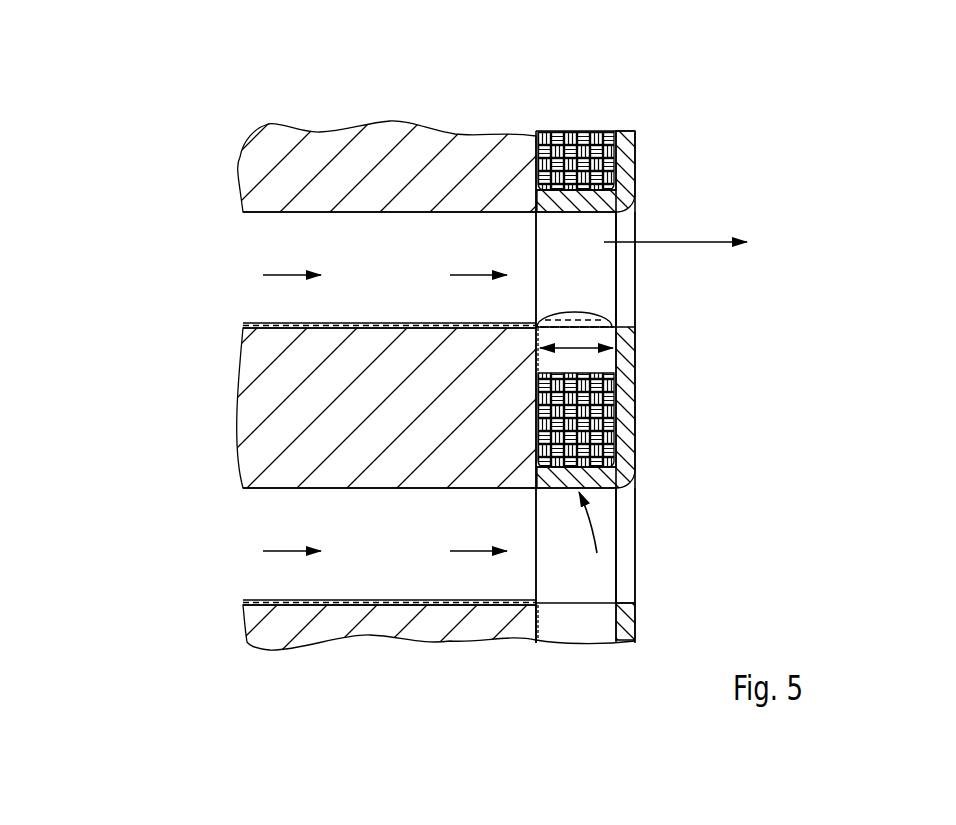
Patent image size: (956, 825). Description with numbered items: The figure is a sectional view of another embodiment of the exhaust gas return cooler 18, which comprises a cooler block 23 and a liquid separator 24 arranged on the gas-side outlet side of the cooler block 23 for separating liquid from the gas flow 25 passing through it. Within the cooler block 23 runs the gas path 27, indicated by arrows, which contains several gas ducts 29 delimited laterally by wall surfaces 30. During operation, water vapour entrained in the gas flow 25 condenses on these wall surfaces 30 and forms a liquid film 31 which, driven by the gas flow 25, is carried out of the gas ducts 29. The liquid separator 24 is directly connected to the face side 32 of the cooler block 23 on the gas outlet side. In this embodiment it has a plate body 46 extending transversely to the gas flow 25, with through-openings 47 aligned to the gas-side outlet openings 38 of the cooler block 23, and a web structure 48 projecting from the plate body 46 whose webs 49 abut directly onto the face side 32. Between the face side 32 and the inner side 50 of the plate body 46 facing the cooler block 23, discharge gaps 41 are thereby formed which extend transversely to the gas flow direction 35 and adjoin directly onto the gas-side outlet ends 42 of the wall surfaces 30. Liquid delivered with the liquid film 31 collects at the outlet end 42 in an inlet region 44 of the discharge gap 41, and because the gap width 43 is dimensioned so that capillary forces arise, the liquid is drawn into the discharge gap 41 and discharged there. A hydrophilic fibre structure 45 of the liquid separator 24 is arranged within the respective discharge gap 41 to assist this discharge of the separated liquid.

The exhaust gas return cooler 18 is at (203, 122).
The cooler block 23 is at (258, 410).
The liquid separator 24 is at (638, 166).
The gas flow 25 is at (470, 275).
The gas path 27 is at (285, 275).
The gas ducts 29 is at (257, 295).
The wall surfaces 30 is at (368, 323).
The liquid film 31 is at (419, 323).
The face side 32 is at (540, 622).
The gas flow direction 35 is at (714, 241).
The gas-side outlet openings 38 is at (537, 242).
The discharge gaps 41 is at (587, 363).
The gas-side outlet ends 42 is at (540, 322).
The gap width 43 is at (580, 346).
The inlet region 44 is at (580, 318).
The hydrophilic fibre structure 45 is at (590, 430).
The plate body 46 is at (637, 388).
The through-openings 47 is at (624, 263).
The web structure 48 is at (594, 537).
The webs 49 is at (585, 205).
The inner side 50 is at (614, 622).